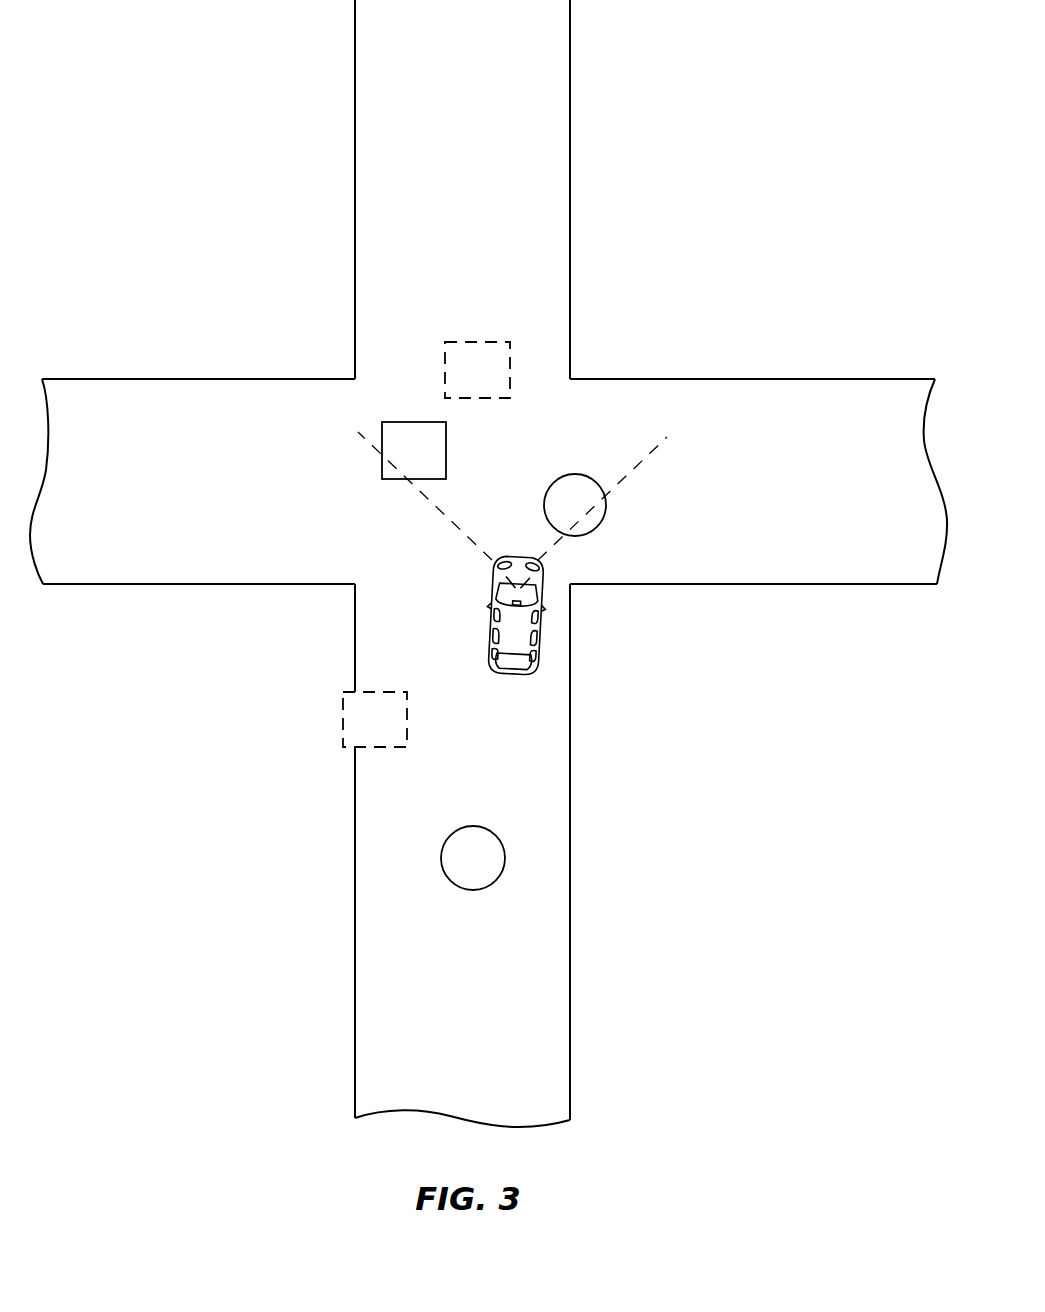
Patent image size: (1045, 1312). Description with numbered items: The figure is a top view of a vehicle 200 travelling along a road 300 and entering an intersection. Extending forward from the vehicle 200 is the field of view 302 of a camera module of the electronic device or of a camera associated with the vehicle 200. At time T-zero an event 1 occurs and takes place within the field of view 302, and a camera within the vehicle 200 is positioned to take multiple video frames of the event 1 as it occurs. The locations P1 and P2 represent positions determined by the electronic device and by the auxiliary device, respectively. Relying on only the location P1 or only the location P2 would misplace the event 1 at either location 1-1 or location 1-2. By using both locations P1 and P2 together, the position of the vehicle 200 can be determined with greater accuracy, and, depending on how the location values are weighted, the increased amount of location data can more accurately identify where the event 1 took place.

The event 1 is at (414, 450).
The location 1-1 is at (477, 370).
The location 1-2 is at (375, 719).
The vehicle 200 is at (565, 630).
The road 300 is at (485, 748).
The field of view 302 is at (590, 456).
The location P1 is at (575, 505).
The location P2 is at (473, 858).